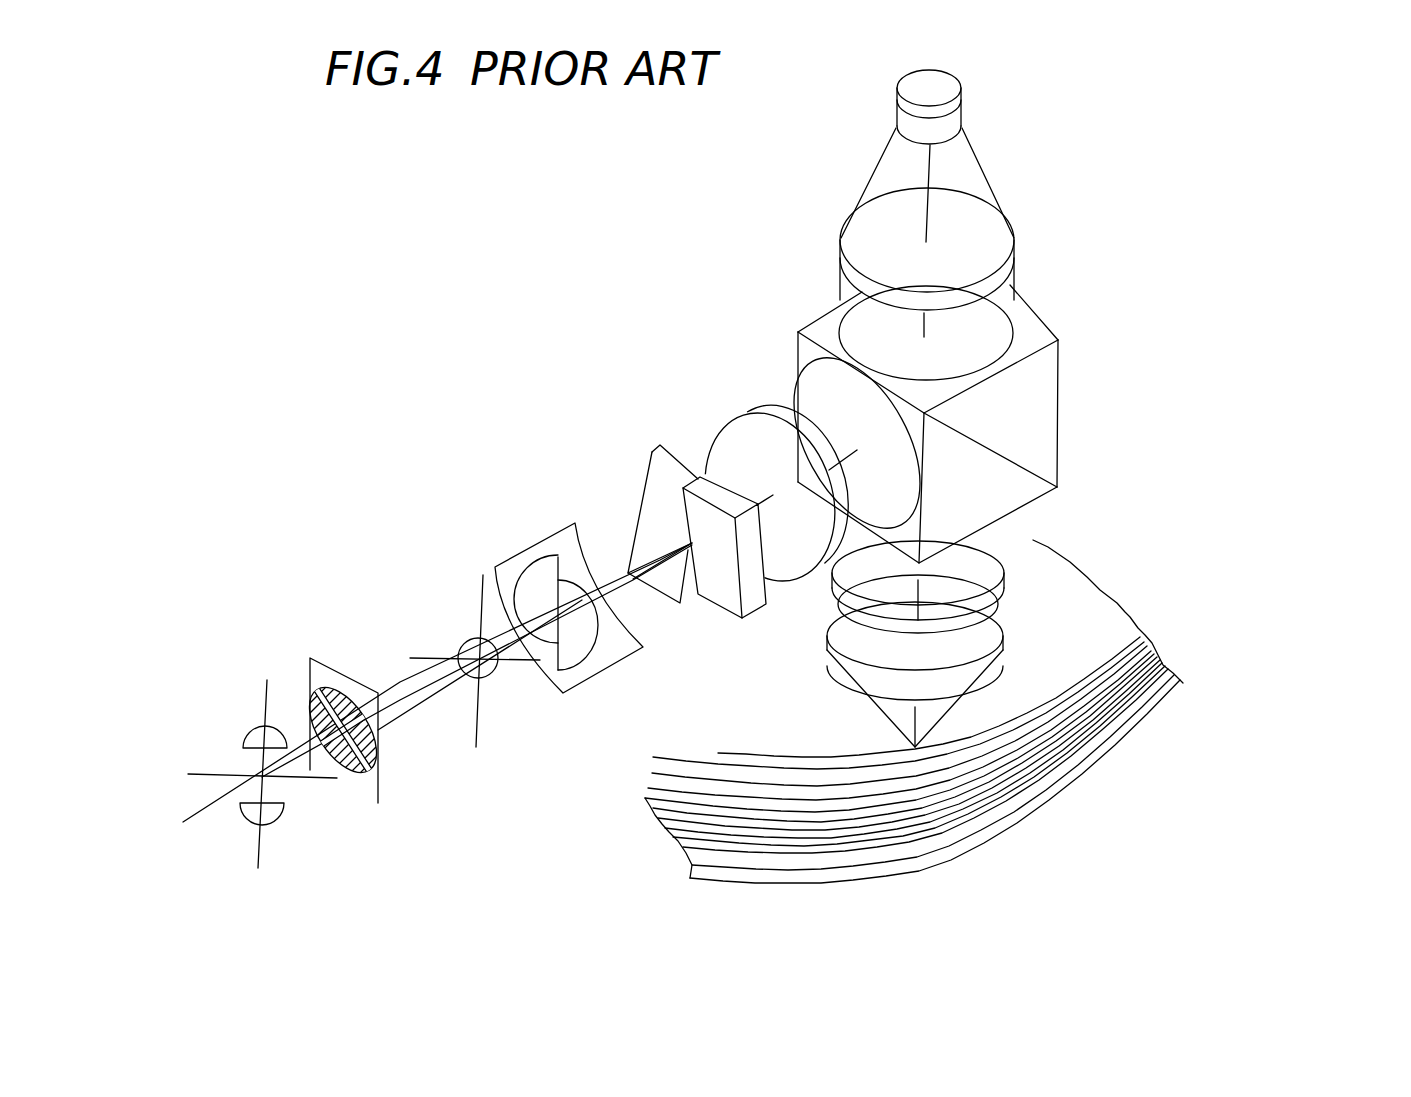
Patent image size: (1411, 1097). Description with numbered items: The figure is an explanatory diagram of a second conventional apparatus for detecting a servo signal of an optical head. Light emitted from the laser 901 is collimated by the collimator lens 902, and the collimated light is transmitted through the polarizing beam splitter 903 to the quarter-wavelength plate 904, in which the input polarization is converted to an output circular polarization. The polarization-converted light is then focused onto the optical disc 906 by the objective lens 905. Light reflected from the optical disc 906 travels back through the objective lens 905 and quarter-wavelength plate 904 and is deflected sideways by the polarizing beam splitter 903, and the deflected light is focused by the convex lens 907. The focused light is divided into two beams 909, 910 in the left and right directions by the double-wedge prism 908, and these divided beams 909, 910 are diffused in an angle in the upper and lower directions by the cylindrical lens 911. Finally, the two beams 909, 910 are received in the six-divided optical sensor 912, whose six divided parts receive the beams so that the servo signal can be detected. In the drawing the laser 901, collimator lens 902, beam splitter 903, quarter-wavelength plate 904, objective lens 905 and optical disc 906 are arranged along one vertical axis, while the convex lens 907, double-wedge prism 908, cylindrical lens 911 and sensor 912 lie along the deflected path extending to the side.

The laser 901 is at (945, 125).
The collimator lens 902 is at (983, 242).
The polarizing beam splitter 903 is at (1017, 405).
The quarter-wavelength plate 904 is at (985, 577).
The objective lens 905 is at (977, 642).
The optical disc 906 is at (967, 806).
The convex lens 907 is at (740, 440).
The double-wedge prism 908 is at (650, 502).
The beam 909 is at (468, 640).
The beam 910 is at (497, 670).
The cylindrical lens 911 is at (538, 573).
The six-divided optical sensor 912 is at (337, 688).